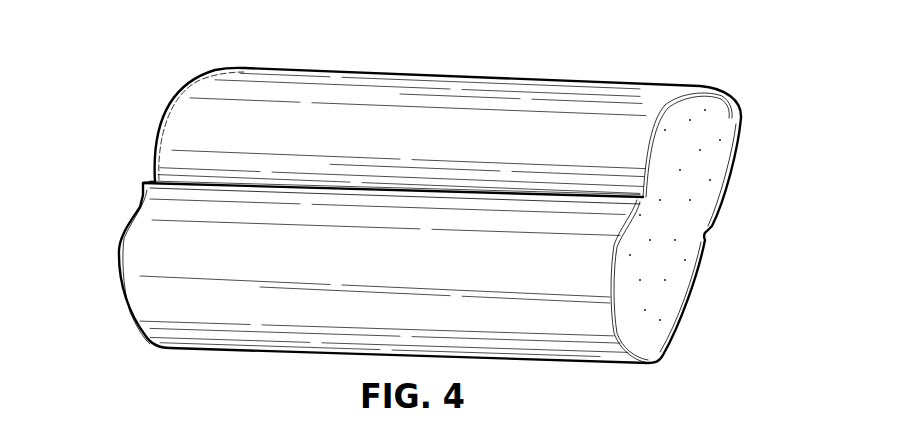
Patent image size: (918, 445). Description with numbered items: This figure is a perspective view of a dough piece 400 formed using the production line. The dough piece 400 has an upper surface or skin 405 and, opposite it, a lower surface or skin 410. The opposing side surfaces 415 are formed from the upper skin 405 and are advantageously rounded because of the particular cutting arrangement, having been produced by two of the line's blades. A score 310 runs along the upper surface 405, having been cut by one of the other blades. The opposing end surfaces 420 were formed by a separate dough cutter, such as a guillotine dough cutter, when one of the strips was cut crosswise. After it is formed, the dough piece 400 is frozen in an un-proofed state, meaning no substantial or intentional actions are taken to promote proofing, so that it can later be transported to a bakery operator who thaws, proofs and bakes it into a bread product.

The dough piece 400 is at (141, 63).
The upper surface or skin 405 is at (540, 107).
The score 310 is at (172, 182).
The end surfaces 420 is at (122, 250).
The side surfaces 415 is at (232, 322).
The lower surface or skin 410 is at (690, 293).